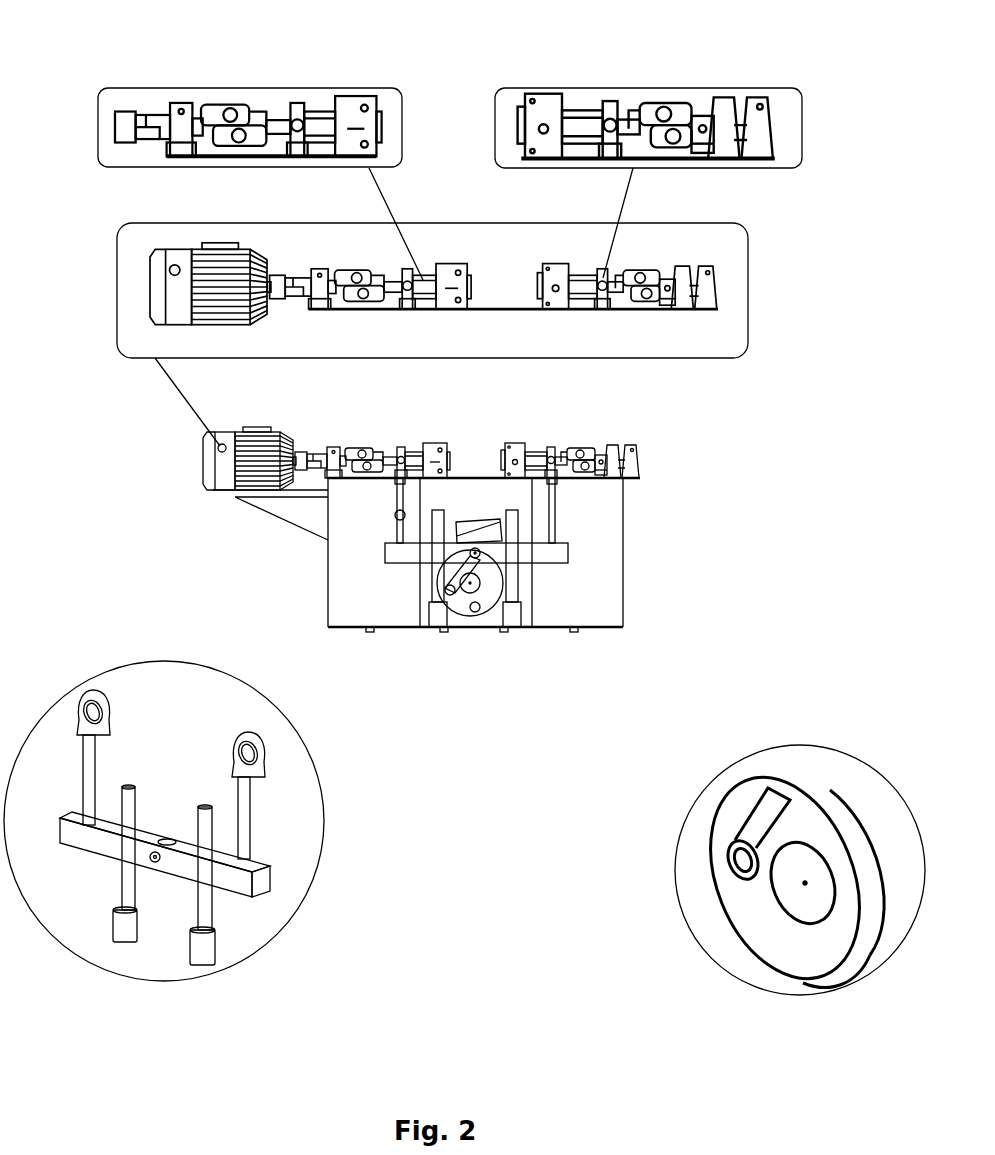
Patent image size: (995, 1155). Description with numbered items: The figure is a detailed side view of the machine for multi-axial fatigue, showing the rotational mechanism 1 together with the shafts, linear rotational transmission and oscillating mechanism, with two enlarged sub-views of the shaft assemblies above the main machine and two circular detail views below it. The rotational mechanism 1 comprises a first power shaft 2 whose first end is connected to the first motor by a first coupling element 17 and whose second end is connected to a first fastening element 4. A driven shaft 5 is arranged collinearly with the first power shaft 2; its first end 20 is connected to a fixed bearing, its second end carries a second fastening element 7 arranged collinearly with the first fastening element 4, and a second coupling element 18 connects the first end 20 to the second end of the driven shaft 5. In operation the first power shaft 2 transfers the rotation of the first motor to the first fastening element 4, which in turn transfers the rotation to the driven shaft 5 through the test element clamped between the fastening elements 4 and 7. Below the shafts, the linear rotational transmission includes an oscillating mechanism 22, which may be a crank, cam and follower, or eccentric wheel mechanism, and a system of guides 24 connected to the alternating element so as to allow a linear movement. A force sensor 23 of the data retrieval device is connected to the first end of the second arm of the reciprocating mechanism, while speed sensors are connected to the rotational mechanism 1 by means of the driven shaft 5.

The rotational mechanism 1 is at (117, 273).
The first power shaft 2 is at (98, 122).
The first fastening element 4 is at (353, 100).
The driven shaft 5 is at (802, 123).
The second fastening element 7 is at (548, 117).
The first coupling element 17 is at (258, 110).
The second coupling element 18 is at (677, 107).
The first end of the driven shaft 20 is at (703, 110).
The oscillating mechanism 22 is at (480, 612).
The force sensor 23 is at (267, 867).
The system of guides 24 is at (398, 523).